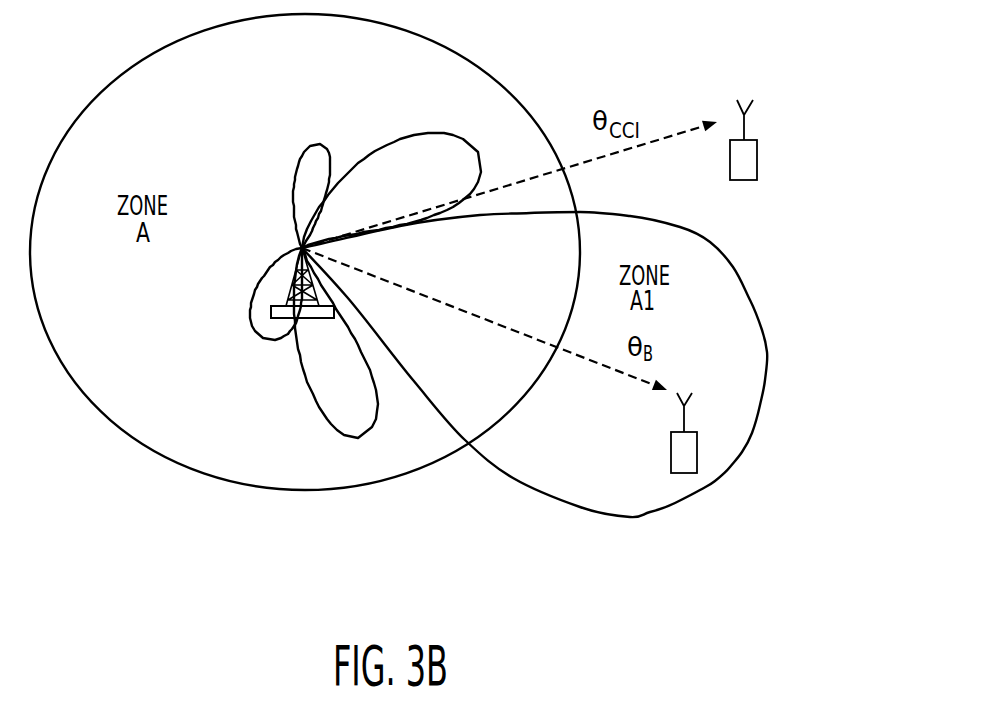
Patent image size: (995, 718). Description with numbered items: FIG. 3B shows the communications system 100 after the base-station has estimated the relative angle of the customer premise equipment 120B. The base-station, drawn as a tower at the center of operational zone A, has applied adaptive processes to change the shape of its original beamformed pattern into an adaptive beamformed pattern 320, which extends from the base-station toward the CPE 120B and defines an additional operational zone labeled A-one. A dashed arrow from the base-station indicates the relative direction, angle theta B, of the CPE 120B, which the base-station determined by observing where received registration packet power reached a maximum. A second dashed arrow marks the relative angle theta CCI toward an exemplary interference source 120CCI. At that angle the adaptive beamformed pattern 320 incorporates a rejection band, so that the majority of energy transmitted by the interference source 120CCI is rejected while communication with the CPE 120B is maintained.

The communications system 100 is at (78, 46).
The interference source 120CCI is at (721, 158).
The customer premise equipment 120B is at (660, 462).
The adaptive beamformed pattern 320 is at (509, 486).